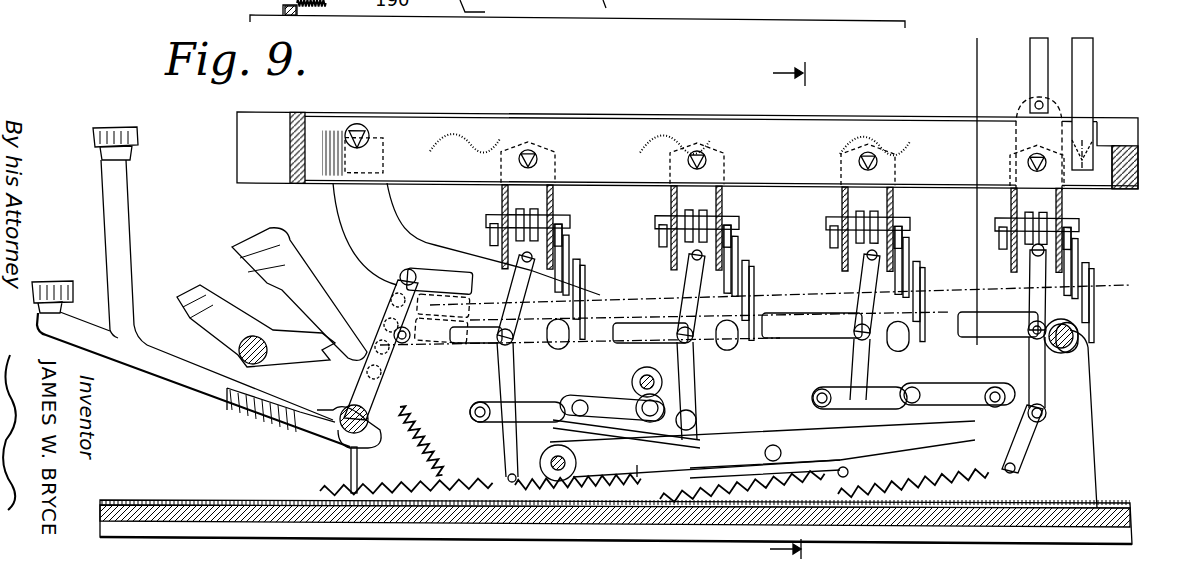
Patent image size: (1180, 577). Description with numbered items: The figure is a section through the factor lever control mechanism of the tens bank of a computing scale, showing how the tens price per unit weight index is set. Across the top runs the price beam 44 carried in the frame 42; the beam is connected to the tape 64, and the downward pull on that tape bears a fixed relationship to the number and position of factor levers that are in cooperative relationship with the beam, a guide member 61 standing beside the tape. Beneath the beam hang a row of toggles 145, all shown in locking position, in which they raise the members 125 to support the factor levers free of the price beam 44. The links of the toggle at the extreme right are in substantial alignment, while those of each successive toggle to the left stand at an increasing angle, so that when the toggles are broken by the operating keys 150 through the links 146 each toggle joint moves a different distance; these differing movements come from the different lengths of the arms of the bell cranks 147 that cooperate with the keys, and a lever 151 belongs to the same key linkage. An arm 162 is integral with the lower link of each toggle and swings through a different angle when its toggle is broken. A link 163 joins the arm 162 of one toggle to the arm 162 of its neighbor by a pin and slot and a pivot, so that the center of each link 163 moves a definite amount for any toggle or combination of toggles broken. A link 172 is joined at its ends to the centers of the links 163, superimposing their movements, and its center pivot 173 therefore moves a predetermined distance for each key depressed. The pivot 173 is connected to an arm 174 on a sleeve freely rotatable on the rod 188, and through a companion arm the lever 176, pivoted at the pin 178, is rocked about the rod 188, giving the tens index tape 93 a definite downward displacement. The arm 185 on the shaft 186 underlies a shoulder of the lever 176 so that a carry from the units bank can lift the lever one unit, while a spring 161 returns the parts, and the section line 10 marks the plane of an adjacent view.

The frame 42 is at (430, 112).
The price beam 44 is at (623, 132).
The operating tape of the tens index 93 is at (977, 70).
The tape 64 is at (1039, 38).
The rod 61 is at (1087, 76).
The section line 10 is at (806, 313).
The member 125 is at (1027, 242).
The toggle 145 is at (862, 296).
The link 146 is at (610, 288).
The bell crank 147 is at (387, 308).
The operating key 150 is at (137, 350).
The lever 151 is at (230, 403).
The spring 161 is at (937, 482).
The arm 162 is at (508, 428).
The link 163 is at (590, 393).
The link 172 is at (875, 443).
The pivot 173 is at (584, 485).
The arm 174 is at (647, 484).
The lever 176 is at (1013, 448).
The pivot pin 178 is at (677, 430).
The arm 185 is at (780, 290).
The shaft 186 is at (650, 380).
The rod 188 is at (577, 458).